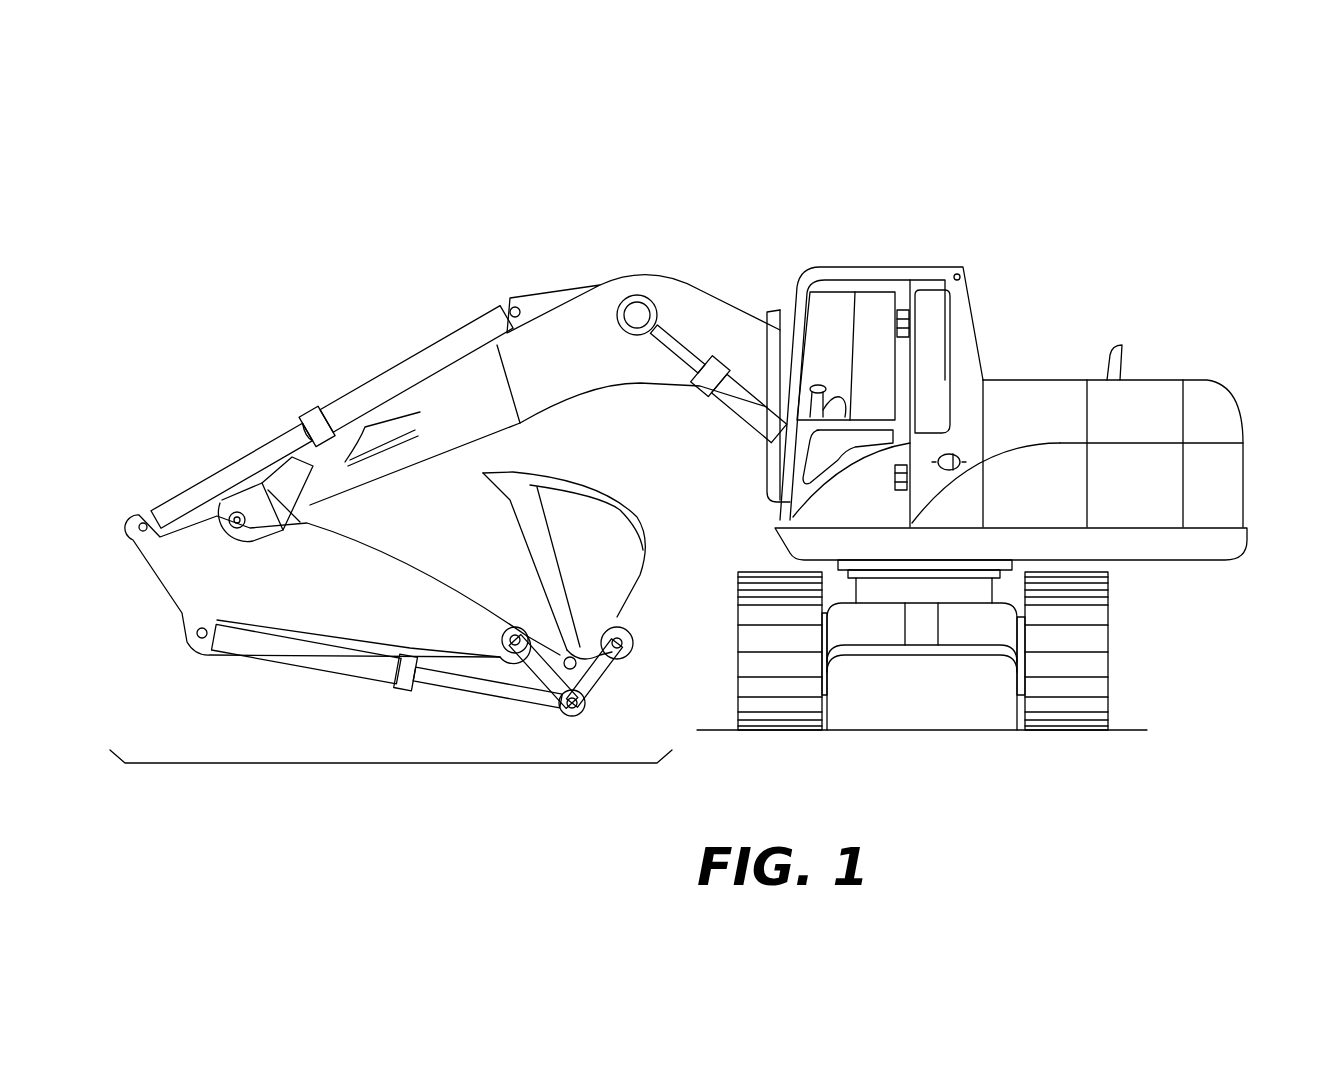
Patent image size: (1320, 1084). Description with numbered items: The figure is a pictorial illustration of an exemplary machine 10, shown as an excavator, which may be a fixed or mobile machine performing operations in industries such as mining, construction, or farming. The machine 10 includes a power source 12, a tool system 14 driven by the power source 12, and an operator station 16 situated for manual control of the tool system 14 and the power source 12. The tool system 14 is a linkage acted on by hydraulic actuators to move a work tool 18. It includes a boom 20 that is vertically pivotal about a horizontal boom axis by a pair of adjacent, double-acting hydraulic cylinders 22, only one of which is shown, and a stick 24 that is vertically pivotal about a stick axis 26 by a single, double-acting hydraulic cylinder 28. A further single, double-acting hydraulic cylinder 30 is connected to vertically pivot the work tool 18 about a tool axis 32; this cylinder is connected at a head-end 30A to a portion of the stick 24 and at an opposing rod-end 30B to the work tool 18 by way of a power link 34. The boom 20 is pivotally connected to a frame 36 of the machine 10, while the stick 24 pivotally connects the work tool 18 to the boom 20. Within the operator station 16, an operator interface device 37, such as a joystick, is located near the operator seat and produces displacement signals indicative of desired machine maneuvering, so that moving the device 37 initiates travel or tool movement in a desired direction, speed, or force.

The machine 10 is at (1150, 207).
The power source 12 is at (1145, 488).
The tool system 14 is at (380, 765).
The operator station 16 is at (833, 307).
The work tool 18 is at (620, 563).
The boom 20 is at (595, 368).
The hydraulic cylinders 22 is at (740, 423).
The stick 24 is at (353, 602).
The stick axis 26 is at (237, 520).
The hydraulic cylinder 28 is at (410, 357).
The hydraulic cylinder 30 is at (348, 657).
The head-end 30A is at (240, 643).
The rod-end 30B is at (500, 690).
The tool axis 32 is at (620, 613).
The power link 34 is at (597, 673).
The frame 36 is at (1240, 542).
The operator interface device 37 is at (843, 407).